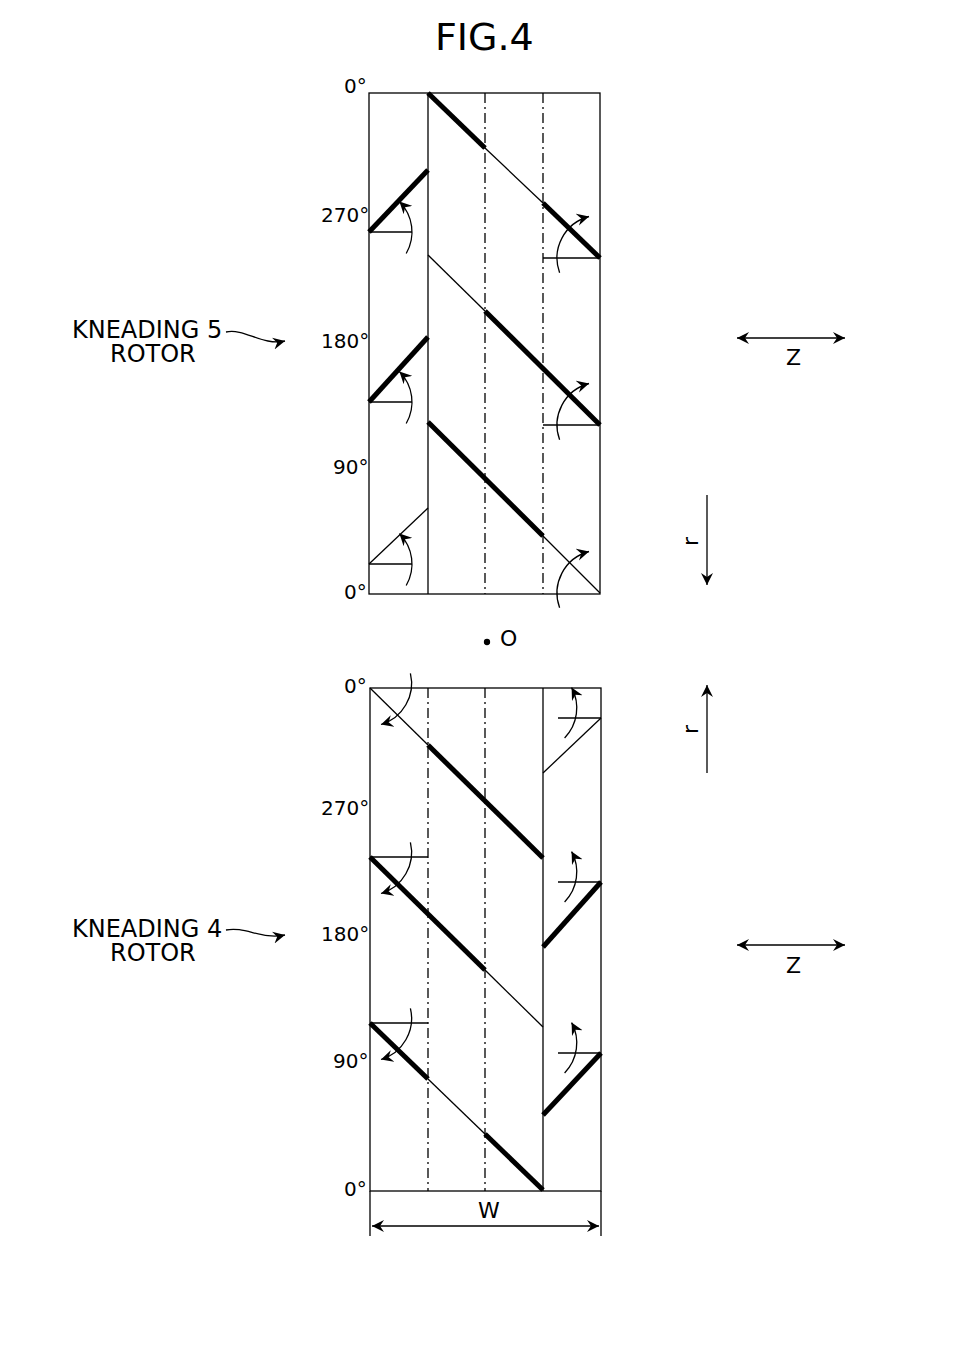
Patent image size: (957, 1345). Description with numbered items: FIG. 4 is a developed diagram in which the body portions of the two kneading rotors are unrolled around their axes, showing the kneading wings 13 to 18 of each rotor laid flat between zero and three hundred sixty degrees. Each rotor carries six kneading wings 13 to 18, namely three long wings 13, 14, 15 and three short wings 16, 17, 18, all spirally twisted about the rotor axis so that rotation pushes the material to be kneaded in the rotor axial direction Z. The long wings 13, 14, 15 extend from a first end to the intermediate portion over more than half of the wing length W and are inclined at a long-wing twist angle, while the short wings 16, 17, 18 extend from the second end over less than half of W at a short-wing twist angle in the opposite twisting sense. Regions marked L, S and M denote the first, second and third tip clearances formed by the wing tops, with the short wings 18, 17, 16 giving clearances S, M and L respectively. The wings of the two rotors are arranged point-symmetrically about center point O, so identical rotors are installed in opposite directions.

The long wing 13 is at (538, 348).
The long wing 14 is at (535, 181).
The long wing 15 is at (533, 508).
The short wing 16 is at (408, 337).
The short wing 17 is at (410, 172).
The short wing 18 is at (390, 537).